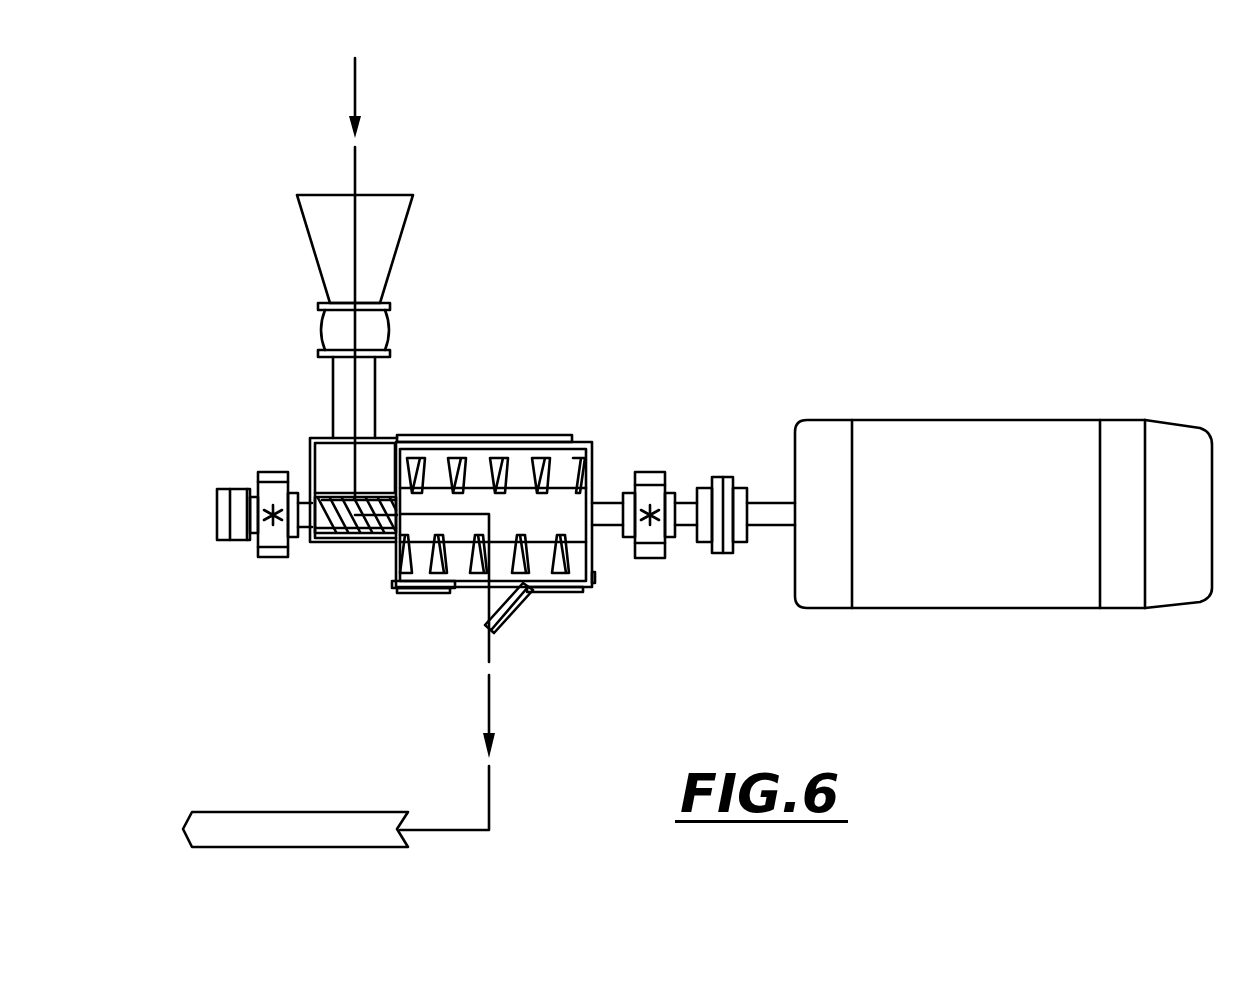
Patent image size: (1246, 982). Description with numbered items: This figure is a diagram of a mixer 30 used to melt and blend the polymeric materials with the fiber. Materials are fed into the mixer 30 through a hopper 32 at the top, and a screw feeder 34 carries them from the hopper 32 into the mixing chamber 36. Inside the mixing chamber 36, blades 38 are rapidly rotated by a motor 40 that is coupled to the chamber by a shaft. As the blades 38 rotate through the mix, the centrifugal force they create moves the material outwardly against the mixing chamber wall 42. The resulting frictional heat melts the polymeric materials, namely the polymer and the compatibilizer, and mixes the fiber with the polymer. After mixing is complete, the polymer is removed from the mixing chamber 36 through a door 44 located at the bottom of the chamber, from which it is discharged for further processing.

The mixer 30 is at (420, 452).
The hopper 32 is at (388, 316).
The screw feeder 34 is at (353, 534).
The mixing chamber 36 is at (457, 458).
The blades 38 is at (538, 458).
The motor 40 is at (980, 420).
The mixing chamber wall 42 is at (592, 442).
The door 44 is at (484, 624).